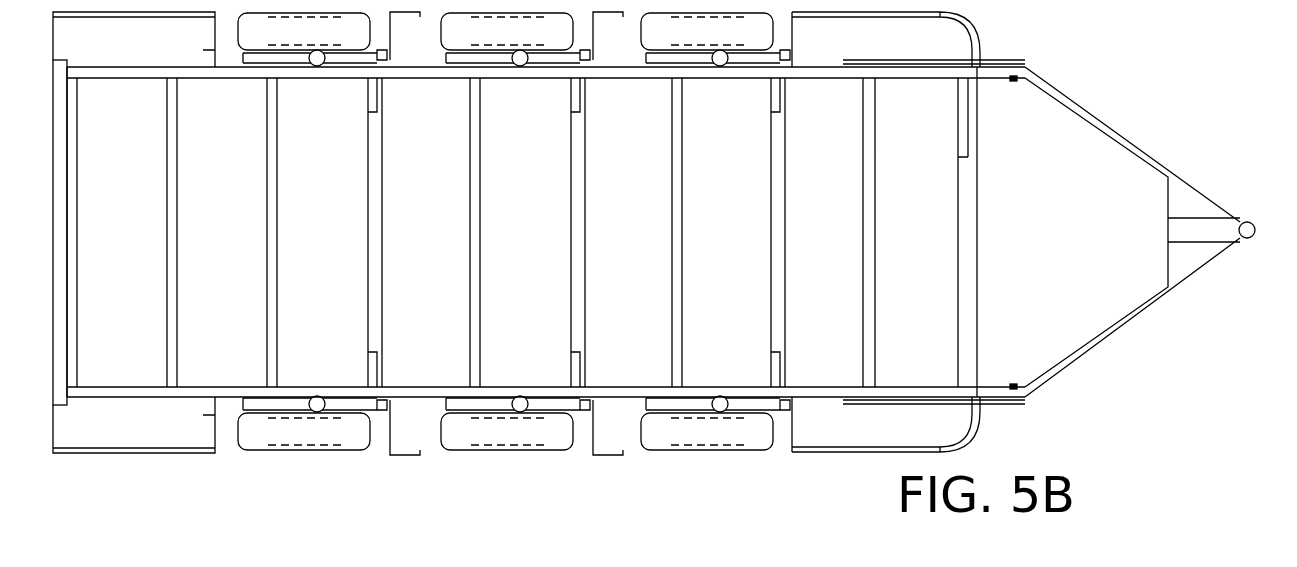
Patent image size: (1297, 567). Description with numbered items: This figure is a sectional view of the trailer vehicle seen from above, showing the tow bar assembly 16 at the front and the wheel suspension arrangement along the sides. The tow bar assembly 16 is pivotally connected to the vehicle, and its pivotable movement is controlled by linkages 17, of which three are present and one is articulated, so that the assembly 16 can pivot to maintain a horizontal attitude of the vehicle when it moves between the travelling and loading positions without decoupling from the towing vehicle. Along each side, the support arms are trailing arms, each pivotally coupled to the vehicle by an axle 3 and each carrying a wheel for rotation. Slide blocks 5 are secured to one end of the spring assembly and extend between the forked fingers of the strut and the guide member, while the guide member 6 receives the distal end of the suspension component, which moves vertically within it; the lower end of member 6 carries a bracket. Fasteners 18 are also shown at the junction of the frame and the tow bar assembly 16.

The axle 3 is at (383, 105).
The slide blocks 5 is at (390, 72).
The guide member 6 is at (391, 52).
The tow bar assembly 16 is at (1118, 318).
The linkages 17 is at (1006, 58).
The fastener 18 is at (1016, 83).